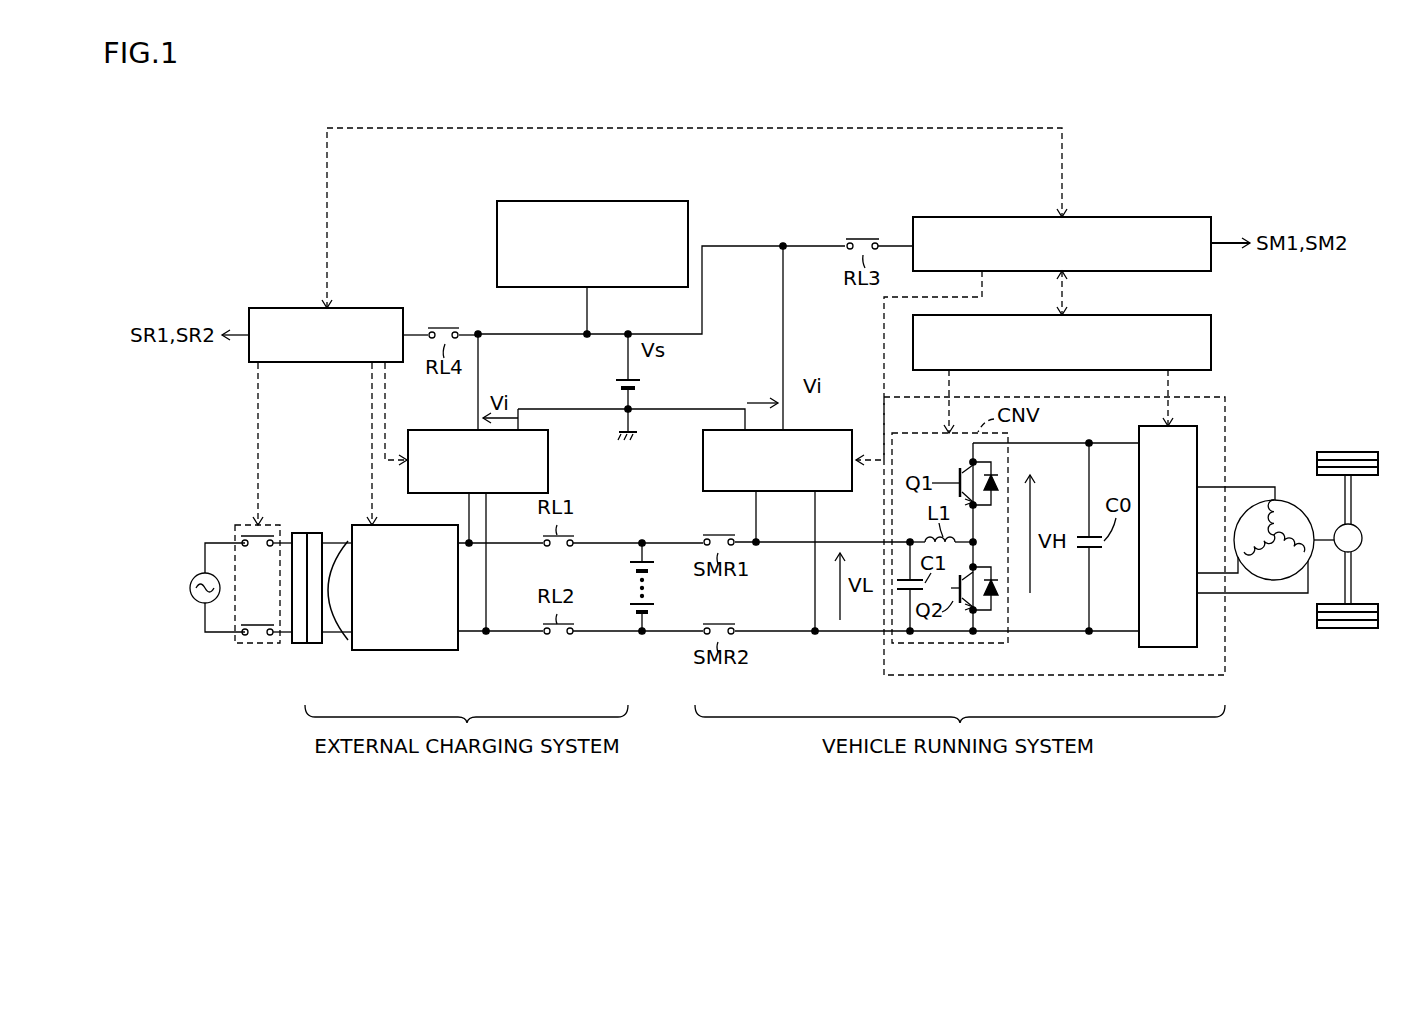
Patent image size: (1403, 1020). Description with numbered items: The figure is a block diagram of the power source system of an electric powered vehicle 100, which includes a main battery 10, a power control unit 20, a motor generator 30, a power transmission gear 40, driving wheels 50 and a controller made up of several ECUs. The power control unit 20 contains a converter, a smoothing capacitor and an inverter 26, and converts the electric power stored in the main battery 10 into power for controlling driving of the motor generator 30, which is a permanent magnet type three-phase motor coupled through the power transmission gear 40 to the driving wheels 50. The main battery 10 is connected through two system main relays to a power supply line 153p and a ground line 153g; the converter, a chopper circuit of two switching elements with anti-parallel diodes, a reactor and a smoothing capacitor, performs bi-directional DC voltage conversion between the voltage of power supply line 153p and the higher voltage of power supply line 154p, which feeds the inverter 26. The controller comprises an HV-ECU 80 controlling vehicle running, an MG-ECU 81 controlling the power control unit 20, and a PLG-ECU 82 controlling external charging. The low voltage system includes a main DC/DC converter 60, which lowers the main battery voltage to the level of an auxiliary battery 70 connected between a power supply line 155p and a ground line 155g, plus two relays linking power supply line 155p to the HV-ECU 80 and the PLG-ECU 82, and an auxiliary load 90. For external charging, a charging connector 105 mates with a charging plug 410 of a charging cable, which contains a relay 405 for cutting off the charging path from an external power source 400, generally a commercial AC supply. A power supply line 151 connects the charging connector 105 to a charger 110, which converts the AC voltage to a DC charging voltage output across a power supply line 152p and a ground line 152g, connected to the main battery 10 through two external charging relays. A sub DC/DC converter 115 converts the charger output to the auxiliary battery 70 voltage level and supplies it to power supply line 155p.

The electric powered vehicle 100 is at (1317, 118).
The PLG-ECU 82 is at (368, 308).
The auxiliary load 90 is at (638, 201).
The HV-ECU 80 is at (1170, 217).
The MG-ECU 81 is at (1170, 315).
The power supply line 155p is at (664, 330).
The ground line 155g is at (665, 407).
The auxiliary battery 70 is at (615, 384).
The main DC/DC converter 60 is at (818, 430).
The sub DC/DC converter 115 is at (548, 460).
The charger 110 is at (395, 652).
The power supply line 151 is at (348, 540).
The charging connector 105 is at (320, 645).
The charging plug 410 is at (303, 645).
The relay 405 is at (258, 645).
The external power source 400 is at (189, 589).
The power supply line 152p is at (512, 547).
The ground line 152g is at (513, 635).
The main battery 10 is at (637, 590).
The power supply line 153p is at (786, 548).
The ground line 153g is at (786, 637).
The power control unit 20 is at (1228, 651).
The power supply line 154p is at (1118, 442).
The inverter 26 is at (1178, 426).
The motor generator 30 is at (1291, 497).
The power transmission gear 40 is at (1362, 530).
The driving wheels 50 is at (1360, 450).